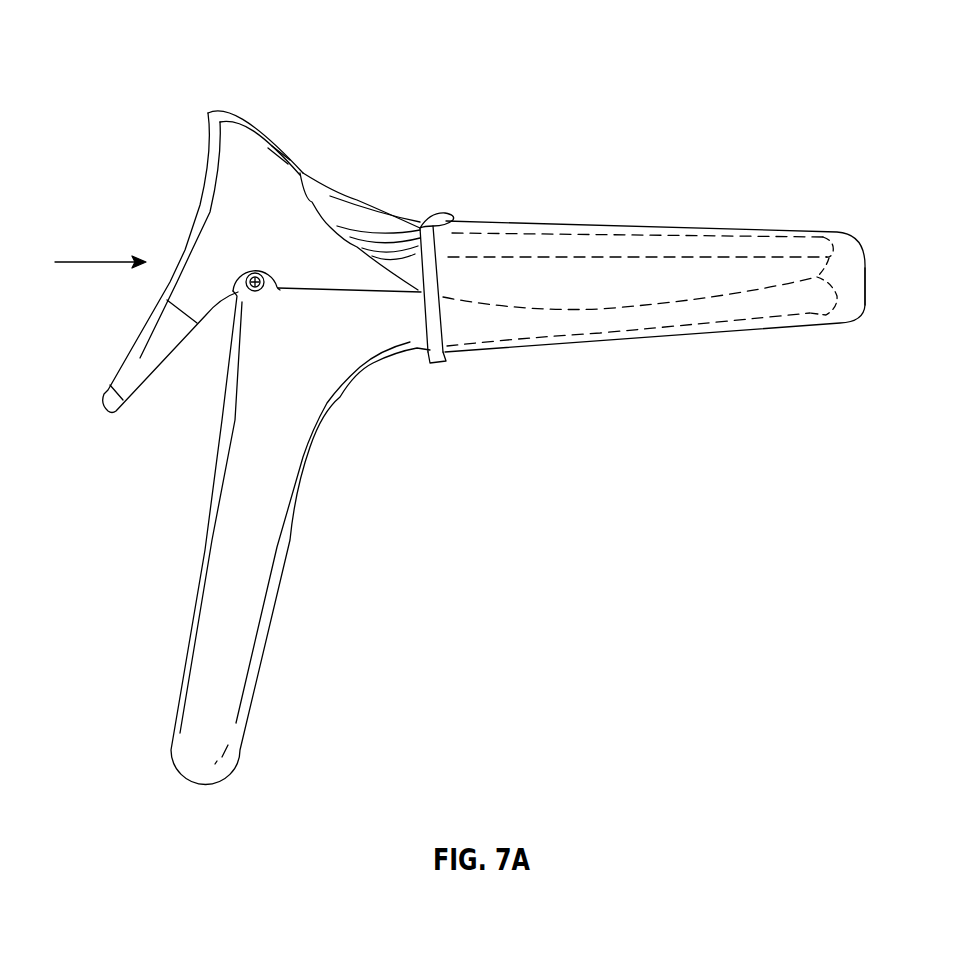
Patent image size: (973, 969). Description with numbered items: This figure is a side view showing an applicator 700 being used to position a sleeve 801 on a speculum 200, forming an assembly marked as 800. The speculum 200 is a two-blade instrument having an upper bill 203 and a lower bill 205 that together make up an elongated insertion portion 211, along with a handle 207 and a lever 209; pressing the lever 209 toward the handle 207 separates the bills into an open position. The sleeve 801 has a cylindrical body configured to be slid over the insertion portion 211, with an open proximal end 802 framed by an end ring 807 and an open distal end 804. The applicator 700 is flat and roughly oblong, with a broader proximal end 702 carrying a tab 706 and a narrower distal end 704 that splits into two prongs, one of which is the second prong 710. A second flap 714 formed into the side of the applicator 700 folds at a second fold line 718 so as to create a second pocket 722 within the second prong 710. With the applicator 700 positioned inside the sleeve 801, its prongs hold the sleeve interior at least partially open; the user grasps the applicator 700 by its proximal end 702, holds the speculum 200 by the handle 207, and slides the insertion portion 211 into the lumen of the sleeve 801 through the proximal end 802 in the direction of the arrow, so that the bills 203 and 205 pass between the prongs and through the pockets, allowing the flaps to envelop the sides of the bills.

The speculum assembly 800 is at (73, 147).
The speculum 200 is at (183, 90).
The proximal end 702 is at (319, 161).
The applicator 700 is at (378, 207).
The tab 706 is at (433, 213).
The second pocket 722 is at (364, 267).
The handle 207 is at (218, 552).
The lever 209 is at (113, 400).
The open proximal end 802 is at (413, 304).
The end ring 807 is at (436, 359).
The sleeve 801 is at (707, 332).
The second fold line 718 is at (562, 254).
The second flap 714 is at (648, 272).
The distal end 704 is at (831, 244).
The upper bill 203 is at (837, 252).
The open distal end 804 is at (870, 276).
The second prong 710 is at (532, 310).
The insertion portion 211 is at (638, 345).
The lower bill 205 is at (815, 305).